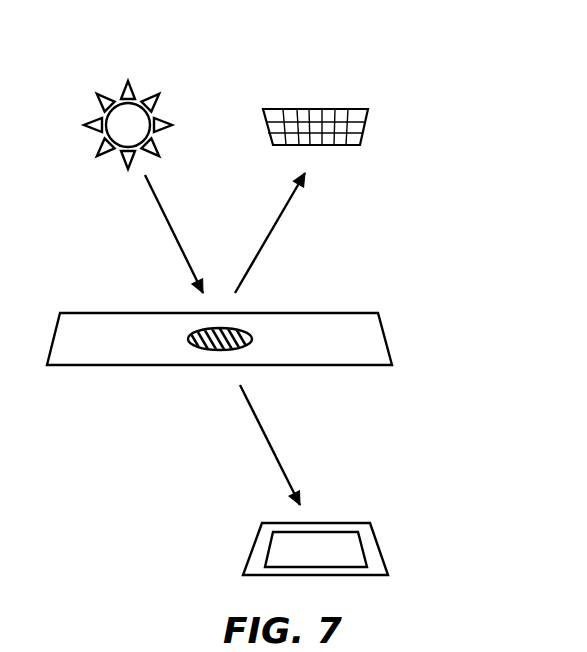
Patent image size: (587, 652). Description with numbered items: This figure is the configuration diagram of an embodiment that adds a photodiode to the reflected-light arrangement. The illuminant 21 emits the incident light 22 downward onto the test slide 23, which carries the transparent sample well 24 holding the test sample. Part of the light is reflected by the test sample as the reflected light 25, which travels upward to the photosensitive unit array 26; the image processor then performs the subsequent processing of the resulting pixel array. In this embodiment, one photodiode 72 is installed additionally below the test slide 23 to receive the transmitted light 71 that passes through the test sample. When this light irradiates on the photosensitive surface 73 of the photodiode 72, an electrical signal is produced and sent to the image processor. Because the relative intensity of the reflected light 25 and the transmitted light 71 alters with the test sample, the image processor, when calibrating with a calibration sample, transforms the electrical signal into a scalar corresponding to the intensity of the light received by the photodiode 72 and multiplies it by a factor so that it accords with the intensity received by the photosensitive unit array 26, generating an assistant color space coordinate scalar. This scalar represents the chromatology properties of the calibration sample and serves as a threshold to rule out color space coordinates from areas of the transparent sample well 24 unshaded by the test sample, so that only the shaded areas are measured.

The illuminant 21 is at (138, 102).
The incident light 22 is at (168, 234).
The test slide 23 is at (117, 313).
The transparent sample well 24 is at (241, 331).
The reflected light 25 is at (270, 233).
The photosensitive unit array 26 is at (333, 108).
The transmitted light 71 is at (273, 445).
The photodiode 72 is at (255, 542).
The photosensitive surface 73 is at (363, 545).